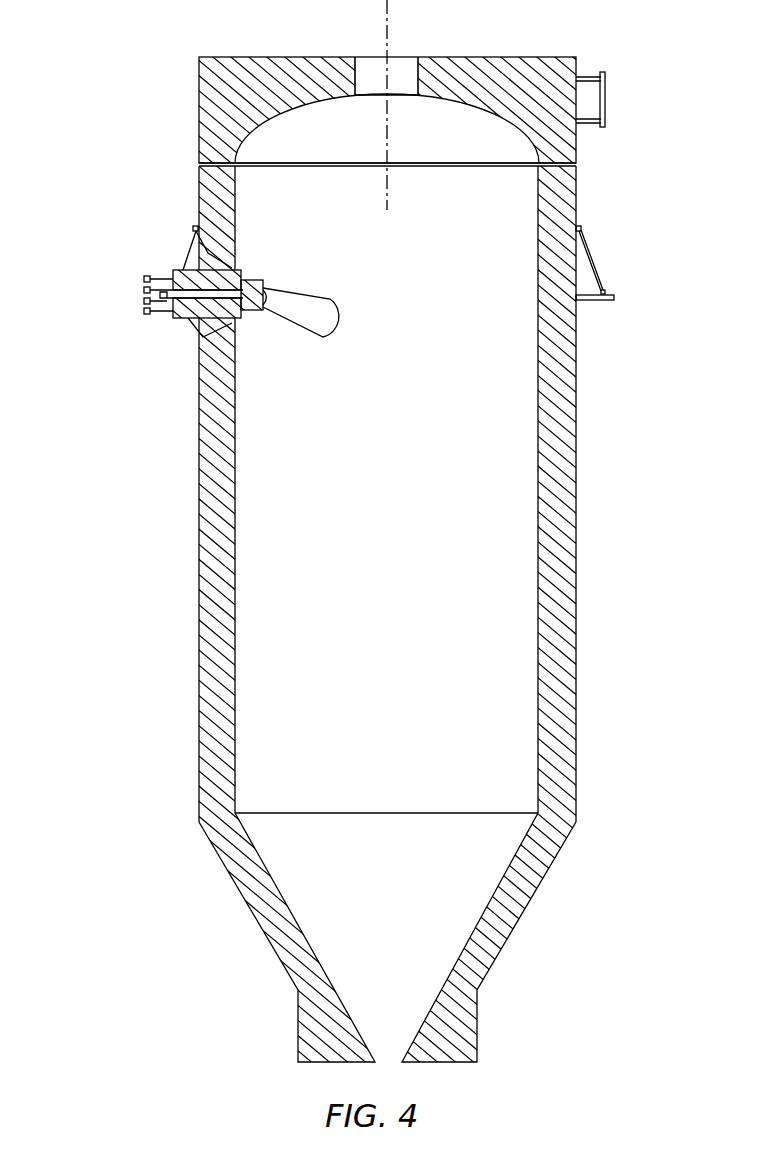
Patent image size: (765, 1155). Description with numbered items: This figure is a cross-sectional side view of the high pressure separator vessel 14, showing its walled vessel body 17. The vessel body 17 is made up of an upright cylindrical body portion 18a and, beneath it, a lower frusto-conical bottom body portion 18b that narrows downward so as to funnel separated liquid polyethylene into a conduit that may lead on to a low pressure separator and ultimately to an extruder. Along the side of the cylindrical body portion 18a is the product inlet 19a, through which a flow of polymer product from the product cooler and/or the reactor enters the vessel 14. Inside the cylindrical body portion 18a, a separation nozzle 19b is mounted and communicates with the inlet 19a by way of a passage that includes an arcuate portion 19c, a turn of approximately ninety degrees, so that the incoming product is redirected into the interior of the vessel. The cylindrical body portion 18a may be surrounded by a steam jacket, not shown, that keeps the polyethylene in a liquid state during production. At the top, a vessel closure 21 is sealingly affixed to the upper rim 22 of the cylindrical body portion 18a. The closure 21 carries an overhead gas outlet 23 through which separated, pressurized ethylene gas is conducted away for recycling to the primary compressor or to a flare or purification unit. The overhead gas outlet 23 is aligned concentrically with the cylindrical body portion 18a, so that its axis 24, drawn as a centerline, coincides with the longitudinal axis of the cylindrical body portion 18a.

The high pressure separator vessel 14 is at (140, 720).
The vessel body 17 is at (197, 578).
The cylindrical body portion 18a is at (577, 443).
The lower frusto-conical bottom body portion 18b is at (564, 846).
The product inlet 19a is at (140, 290).
The separation nozzle 19b is at (337, 320).
The arcuate portion 19c is at (267, 290).
The vessel closure 21 is at (197, 93).
The upper rim 22 is at (197, 166).
The overhead gas outlet 23 is at (356, 82).
The axis 24 is at (390, 75).